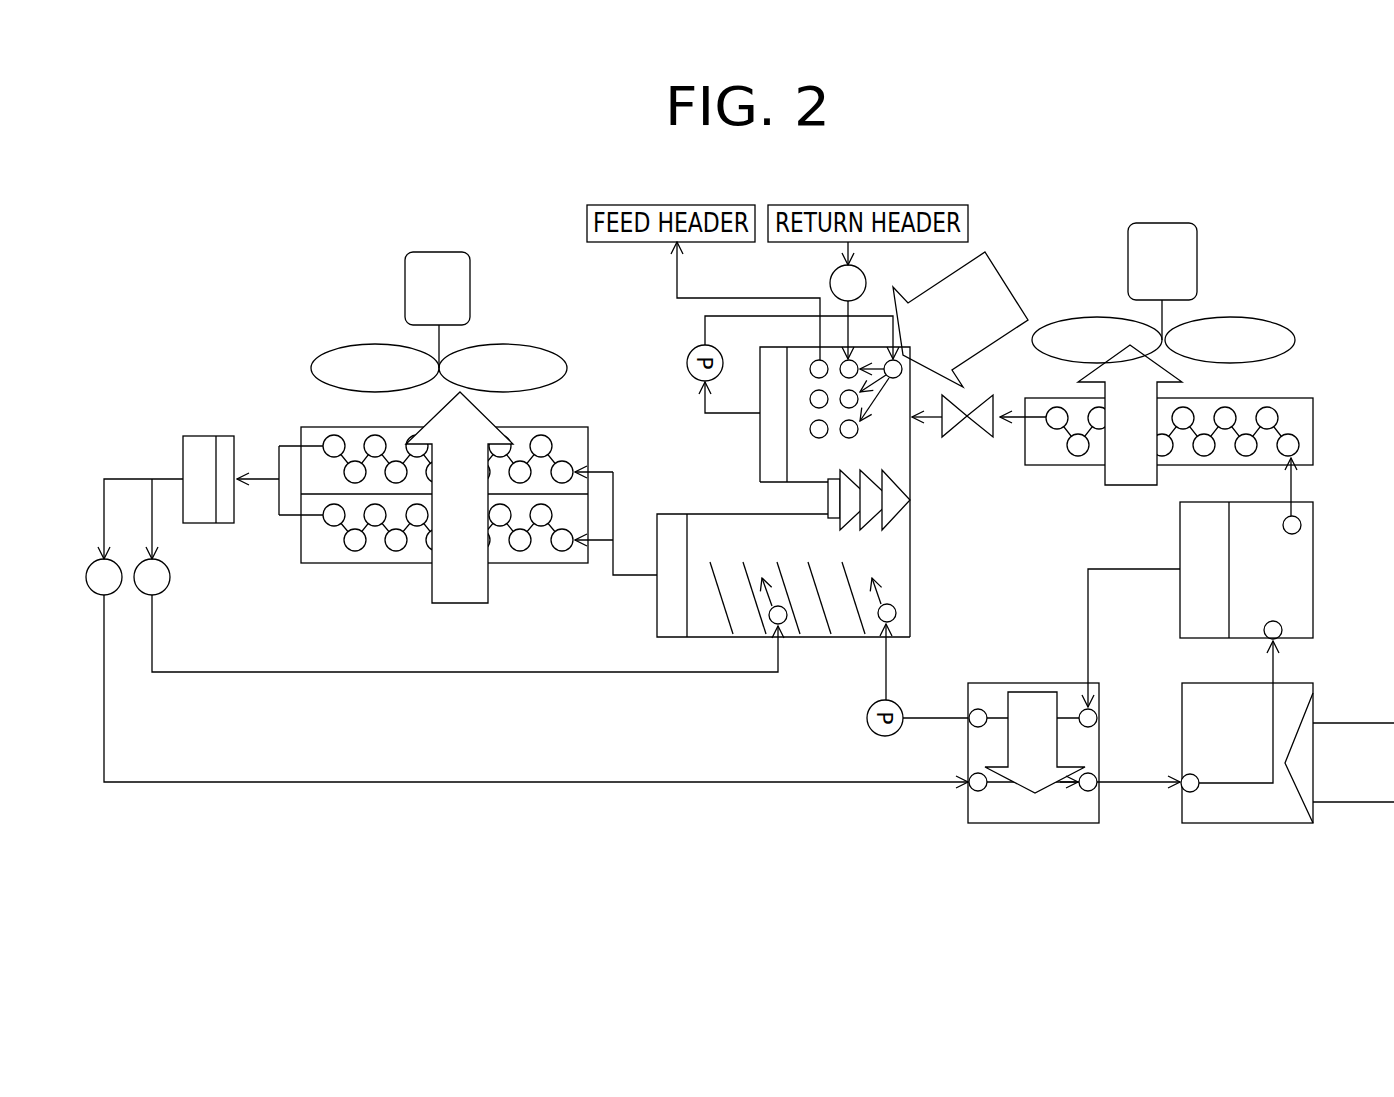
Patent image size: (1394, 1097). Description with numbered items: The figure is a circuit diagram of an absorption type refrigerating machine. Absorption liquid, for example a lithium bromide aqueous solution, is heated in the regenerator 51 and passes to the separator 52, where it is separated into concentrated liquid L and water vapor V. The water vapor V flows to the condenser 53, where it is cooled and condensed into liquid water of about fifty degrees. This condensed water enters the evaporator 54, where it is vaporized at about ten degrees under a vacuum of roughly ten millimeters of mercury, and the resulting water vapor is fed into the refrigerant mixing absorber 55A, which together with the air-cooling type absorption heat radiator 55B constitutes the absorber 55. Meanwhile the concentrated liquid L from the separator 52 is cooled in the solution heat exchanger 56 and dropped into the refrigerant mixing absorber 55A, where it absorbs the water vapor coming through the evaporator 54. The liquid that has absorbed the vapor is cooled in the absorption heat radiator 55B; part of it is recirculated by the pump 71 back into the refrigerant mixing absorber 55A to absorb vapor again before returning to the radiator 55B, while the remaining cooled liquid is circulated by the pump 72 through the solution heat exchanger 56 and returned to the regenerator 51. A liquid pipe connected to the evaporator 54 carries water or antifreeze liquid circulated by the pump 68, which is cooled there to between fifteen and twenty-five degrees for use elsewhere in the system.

The regenerator 51 is at (1238, 823).
The separator 52 is at (1313, 585).
The condenser 53 is at (1313, 420).
The evaporator 54 is at (873, 347).
The absorber 55 is at (454, 517).
The refrigerant mixing absorber 55A is at (672, 637).
The air-cooling type absorption heat radiator 55B is at (538, 563).
The solution heat exchanger 56 is at (1033, 823).
The pump 68 is at (834, 272).
The pump 71 is at (170, 580).
The pump 72 is at (93, 592).
The water vapor V is at (1293, 489).
The concentrated liquid L is at (1125, 569).